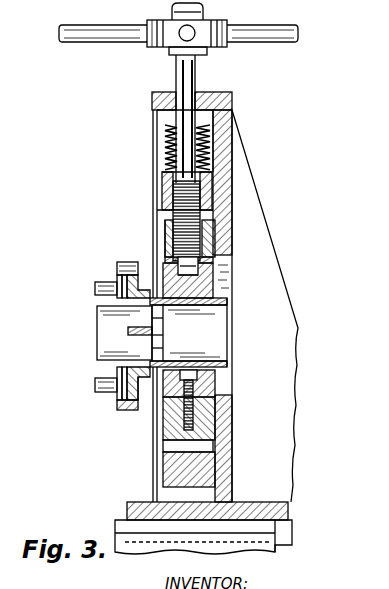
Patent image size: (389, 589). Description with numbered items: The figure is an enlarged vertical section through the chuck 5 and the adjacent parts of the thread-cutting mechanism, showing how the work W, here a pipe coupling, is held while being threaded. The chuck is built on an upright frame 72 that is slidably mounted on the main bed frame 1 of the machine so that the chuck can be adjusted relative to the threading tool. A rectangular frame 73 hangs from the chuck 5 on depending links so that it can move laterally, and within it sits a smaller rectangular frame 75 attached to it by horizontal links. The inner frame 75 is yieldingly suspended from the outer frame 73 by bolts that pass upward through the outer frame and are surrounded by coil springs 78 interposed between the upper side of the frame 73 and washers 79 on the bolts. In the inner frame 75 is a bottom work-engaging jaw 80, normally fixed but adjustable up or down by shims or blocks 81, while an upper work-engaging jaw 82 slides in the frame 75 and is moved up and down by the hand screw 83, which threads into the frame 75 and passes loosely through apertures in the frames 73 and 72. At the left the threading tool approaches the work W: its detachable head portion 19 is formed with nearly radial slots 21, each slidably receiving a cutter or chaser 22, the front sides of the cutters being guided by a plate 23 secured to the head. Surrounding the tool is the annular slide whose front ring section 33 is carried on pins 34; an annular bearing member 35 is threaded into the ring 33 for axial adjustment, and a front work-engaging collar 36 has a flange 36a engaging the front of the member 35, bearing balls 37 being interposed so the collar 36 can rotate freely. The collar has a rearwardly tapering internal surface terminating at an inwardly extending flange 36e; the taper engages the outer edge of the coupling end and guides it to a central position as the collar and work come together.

The main bed frame 1 is at (262, 545).
The chuck 5 is at (137, 210).
The detachable head portion 19 is at (98, 323).
The radial slots 21 is at (130, 332).
The cutter or chaser 22 is at (150, 323).
The plate 23 is at (160, 328).
The front ring section 33 is at (118, 262).
The pins 34 is at (97, 283).
The annular bearing member 35 is at (119, 282).
The work-engaging collar 36 is at (137, 262).
The inwardly extending flange 36e is at (120, 378).
The flange 36a is at (147, 395).
The bearing balls 37 is at (123, 410).
The upright frame 72 is at (255, 183).
The rectangular frame 73 is at (232, 205).
The smaller rectangular frame 75 is at (215, 237).
The coil springs 78 is at (167, 152).
The washers 79 is at (167, 130).
The bottom work-engaging jaw 80 is at (217, 381).
The shims or blocks 81 is at (210, 406).
The upper work-engaging jaw 82 is at (220, 278).
The hand screw 83 is at (190, 80).
The work W is at (218, 328).